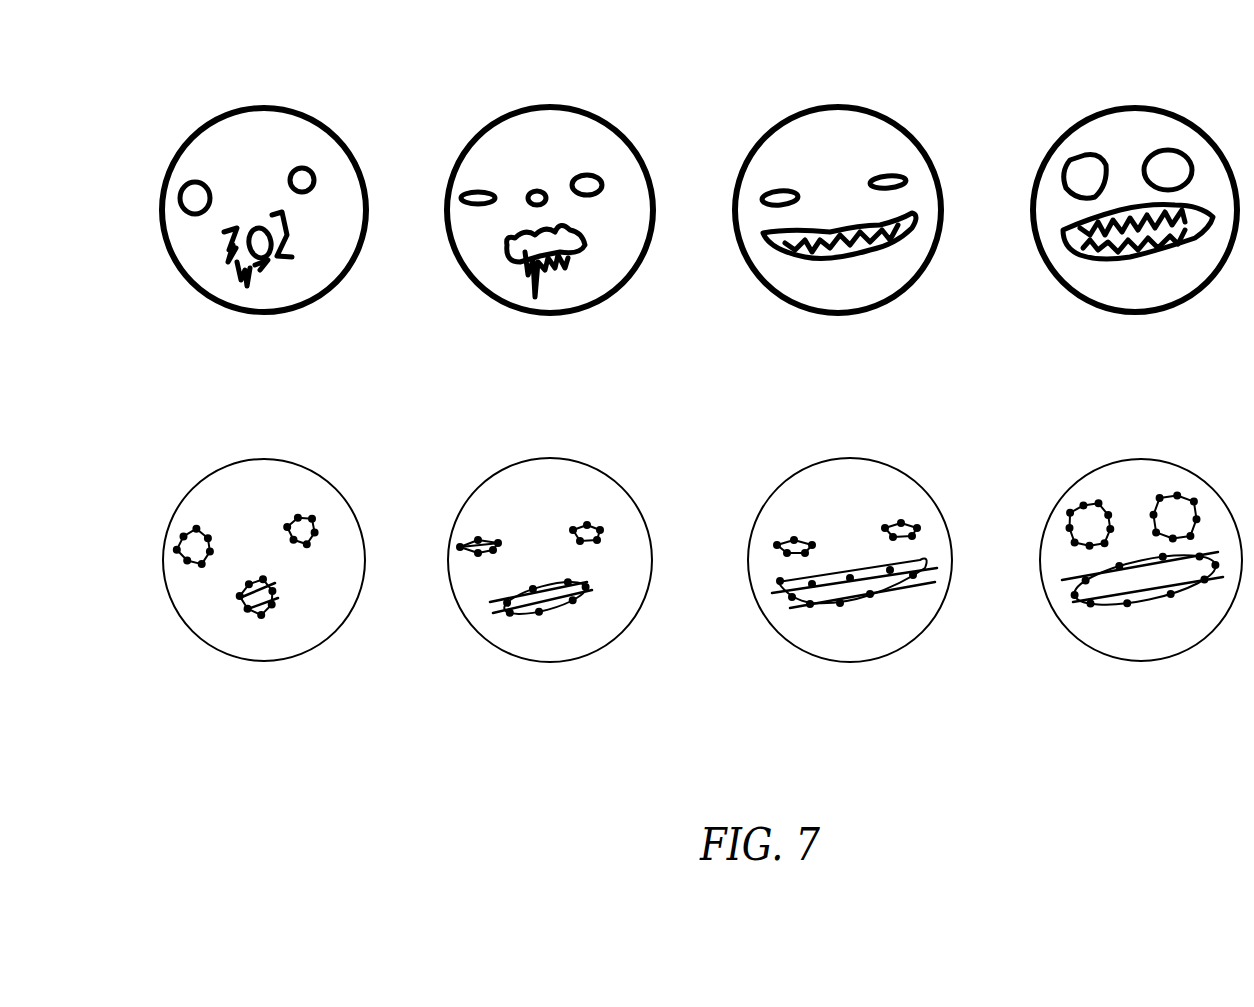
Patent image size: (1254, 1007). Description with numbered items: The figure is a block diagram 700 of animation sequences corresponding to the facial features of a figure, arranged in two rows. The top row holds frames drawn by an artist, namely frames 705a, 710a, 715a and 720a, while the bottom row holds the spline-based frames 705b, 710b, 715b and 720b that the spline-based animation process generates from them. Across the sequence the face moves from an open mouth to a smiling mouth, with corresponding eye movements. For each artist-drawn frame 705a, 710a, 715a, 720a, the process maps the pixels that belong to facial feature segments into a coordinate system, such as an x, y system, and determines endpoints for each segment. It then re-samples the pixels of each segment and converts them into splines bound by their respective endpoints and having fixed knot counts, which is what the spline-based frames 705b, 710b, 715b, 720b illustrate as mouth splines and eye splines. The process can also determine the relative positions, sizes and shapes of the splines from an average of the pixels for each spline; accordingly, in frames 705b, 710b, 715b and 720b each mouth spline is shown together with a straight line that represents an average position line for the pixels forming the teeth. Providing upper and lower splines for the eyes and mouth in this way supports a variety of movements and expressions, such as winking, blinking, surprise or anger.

The block diagram 700 is at (1166, 56).
The frame drawn by an artist 705a is at (226, 371).
The frame drawn by an artist 710a is at (511, 371).
The frame drawn by an artist 715a is at (801, 371).
The frame drawn by an artist 720a is at (1104, 371).
The spline-based frame 705b is at (226, 729).
The spline-based frame 710b is at (518, 729).
The spline-based frame 715b is at (813, 729).
The spline-based frame 720b is at (1115, 729).